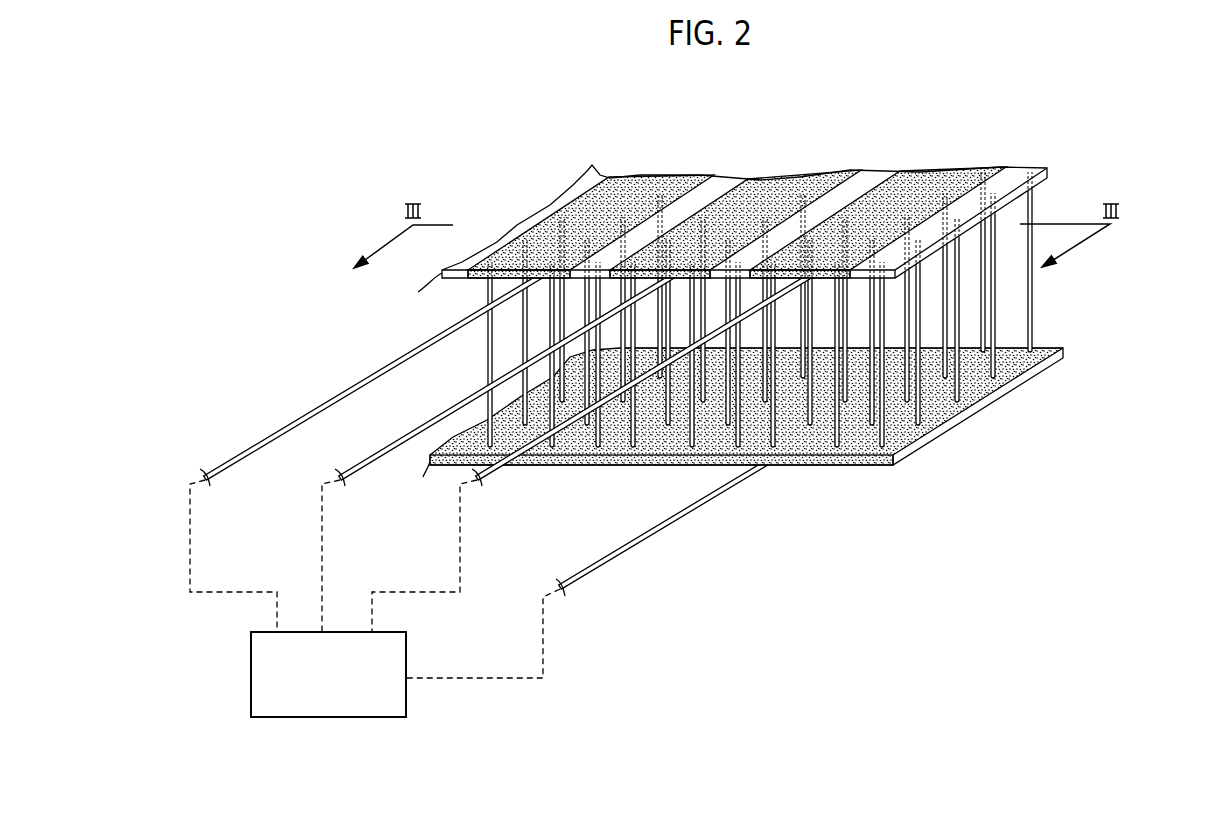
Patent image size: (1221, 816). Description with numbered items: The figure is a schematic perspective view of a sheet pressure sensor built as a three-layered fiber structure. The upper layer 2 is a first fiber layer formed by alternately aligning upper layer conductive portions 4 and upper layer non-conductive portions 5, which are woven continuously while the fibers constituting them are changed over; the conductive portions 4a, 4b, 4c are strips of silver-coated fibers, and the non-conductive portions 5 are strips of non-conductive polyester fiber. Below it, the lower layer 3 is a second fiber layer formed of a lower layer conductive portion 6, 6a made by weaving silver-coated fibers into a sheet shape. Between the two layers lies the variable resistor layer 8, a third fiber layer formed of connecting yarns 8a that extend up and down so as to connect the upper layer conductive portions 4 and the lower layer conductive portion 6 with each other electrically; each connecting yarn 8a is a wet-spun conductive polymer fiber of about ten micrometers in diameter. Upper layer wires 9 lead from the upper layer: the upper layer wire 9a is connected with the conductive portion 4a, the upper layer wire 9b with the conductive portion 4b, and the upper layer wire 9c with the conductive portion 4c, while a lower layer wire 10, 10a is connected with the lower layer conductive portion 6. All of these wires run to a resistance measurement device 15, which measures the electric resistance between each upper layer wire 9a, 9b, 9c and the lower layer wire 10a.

The upper layer 2 is at (785, 191).
The lower layer 3 is at (749, 453).
The upper layer conductive portions 4 is at (739, 190).
The upper layer conductive portion 4a is at (543, 240).
The upper layer conductive portion 4b is at (802, 172).
The upper layer conductive portion 4c is at (937, 180).
The upper layer non-conductive portions 5 is at (585, 182).
The lower layer conductive portion 6 is at (661, 506).
The lower layer conductive portion 6a is at (805, 467).
The variable resistor layer 8 is at (816, 318).
The connecting yarns 8a is at (1034, 293).
The upper layer wires 9 is at (500, 453).
The upper layer wire 9a is at (249, 452).
The upper layer wire 9b is at (388, 452).
The upper layer wire 9c is at (490, 470).
The lower layer wire 10 is at (587, 569).
The lower layer wire 10a is at (648, 536).
The resistance measurement device 15 is at (385, 717).